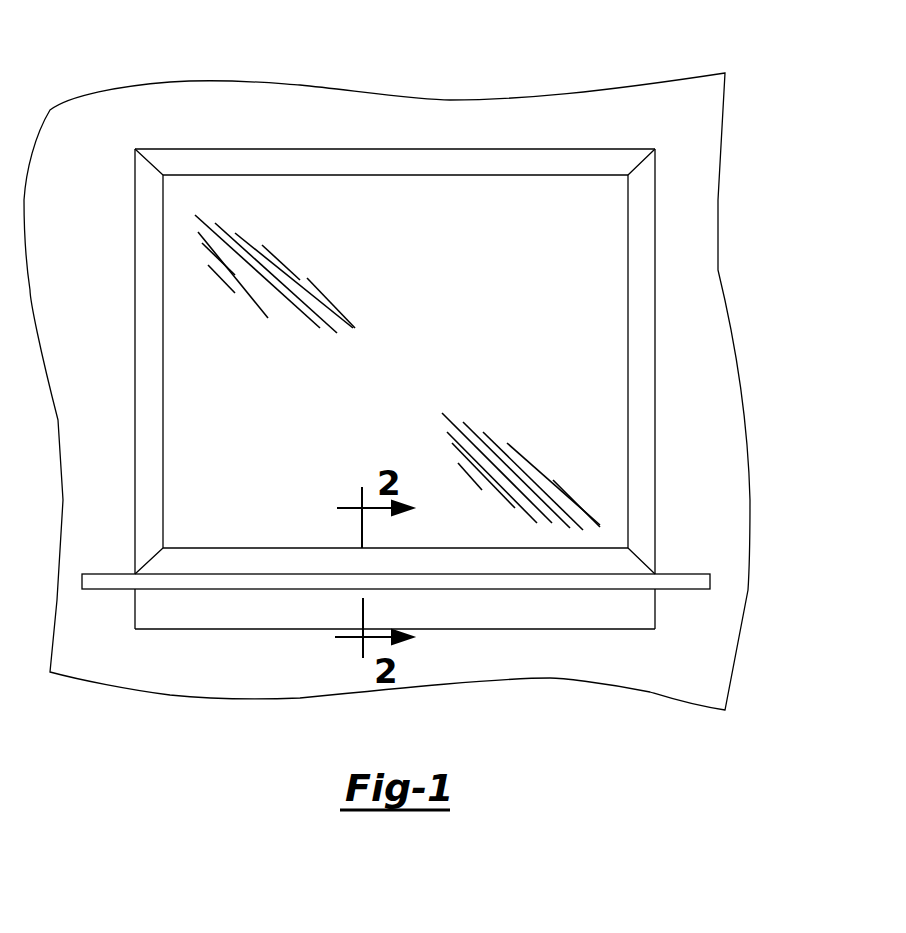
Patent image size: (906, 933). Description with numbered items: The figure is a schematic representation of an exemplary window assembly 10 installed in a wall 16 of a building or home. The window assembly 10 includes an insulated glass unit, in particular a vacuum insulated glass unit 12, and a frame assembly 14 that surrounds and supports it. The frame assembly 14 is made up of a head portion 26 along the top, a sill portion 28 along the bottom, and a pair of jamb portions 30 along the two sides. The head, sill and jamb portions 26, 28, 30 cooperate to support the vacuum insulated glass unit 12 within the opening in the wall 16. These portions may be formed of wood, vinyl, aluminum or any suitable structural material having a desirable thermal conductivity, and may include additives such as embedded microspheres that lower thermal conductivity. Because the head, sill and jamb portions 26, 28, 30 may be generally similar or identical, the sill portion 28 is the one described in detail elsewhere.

The window assembly 10 is at (482, 88).
The vacuum insulated glass (VIG) unit 12 is at (630, 382).
The frame assembly 14 is at (566, 147).
The wall 16 is at (213, 112).
The head portion 26 is at (342, 162).
The sill portion 28 is at (253, 557).
The jamb portions 30 is at (141, 258).